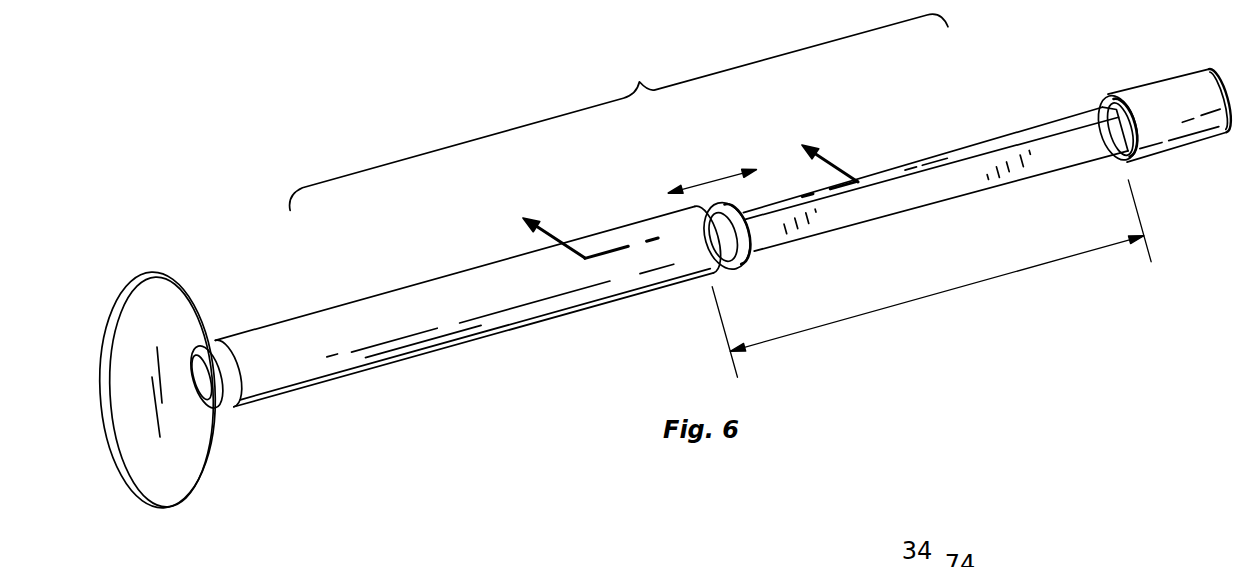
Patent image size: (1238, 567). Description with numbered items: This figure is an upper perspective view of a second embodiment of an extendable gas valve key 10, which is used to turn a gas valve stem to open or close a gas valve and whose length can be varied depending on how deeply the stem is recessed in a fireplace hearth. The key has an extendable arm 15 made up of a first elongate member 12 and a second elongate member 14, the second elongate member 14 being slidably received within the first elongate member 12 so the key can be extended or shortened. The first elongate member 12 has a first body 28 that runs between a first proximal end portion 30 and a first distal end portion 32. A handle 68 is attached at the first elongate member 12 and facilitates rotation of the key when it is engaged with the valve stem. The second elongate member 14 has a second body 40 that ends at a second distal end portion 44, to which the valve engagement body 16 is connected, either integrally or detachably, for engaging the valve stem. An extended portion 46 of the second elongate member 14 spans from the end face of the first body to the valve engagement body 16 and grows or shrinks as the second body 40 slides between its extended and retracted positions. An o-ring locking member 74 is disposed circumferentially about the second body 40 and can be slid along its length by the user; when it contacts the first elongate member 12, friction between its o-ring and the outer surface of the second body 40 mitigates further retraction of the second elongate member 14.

The gas valve key 10 is at (268, 170).
The first elongate member 12 is at (376, 265).
The second elongate member 14 is at (965, 122).
The extendable arm 15 is at (610, 105).
The valve engagement body 16 is at (1156, 78).
The first body 28 is at (470, 282).
The first proximal end portion 30 is at (238, 333).
The first distal end portion 32 is at (690, 207).
The second body 40 is at (1050, 128).
The second distal end portion 44 is at (1105, 110).
The extended portion 46 is at (987, 278).
The handle 68 is at (173, 482).
The o-ring locking member 74 is at (748, 262).